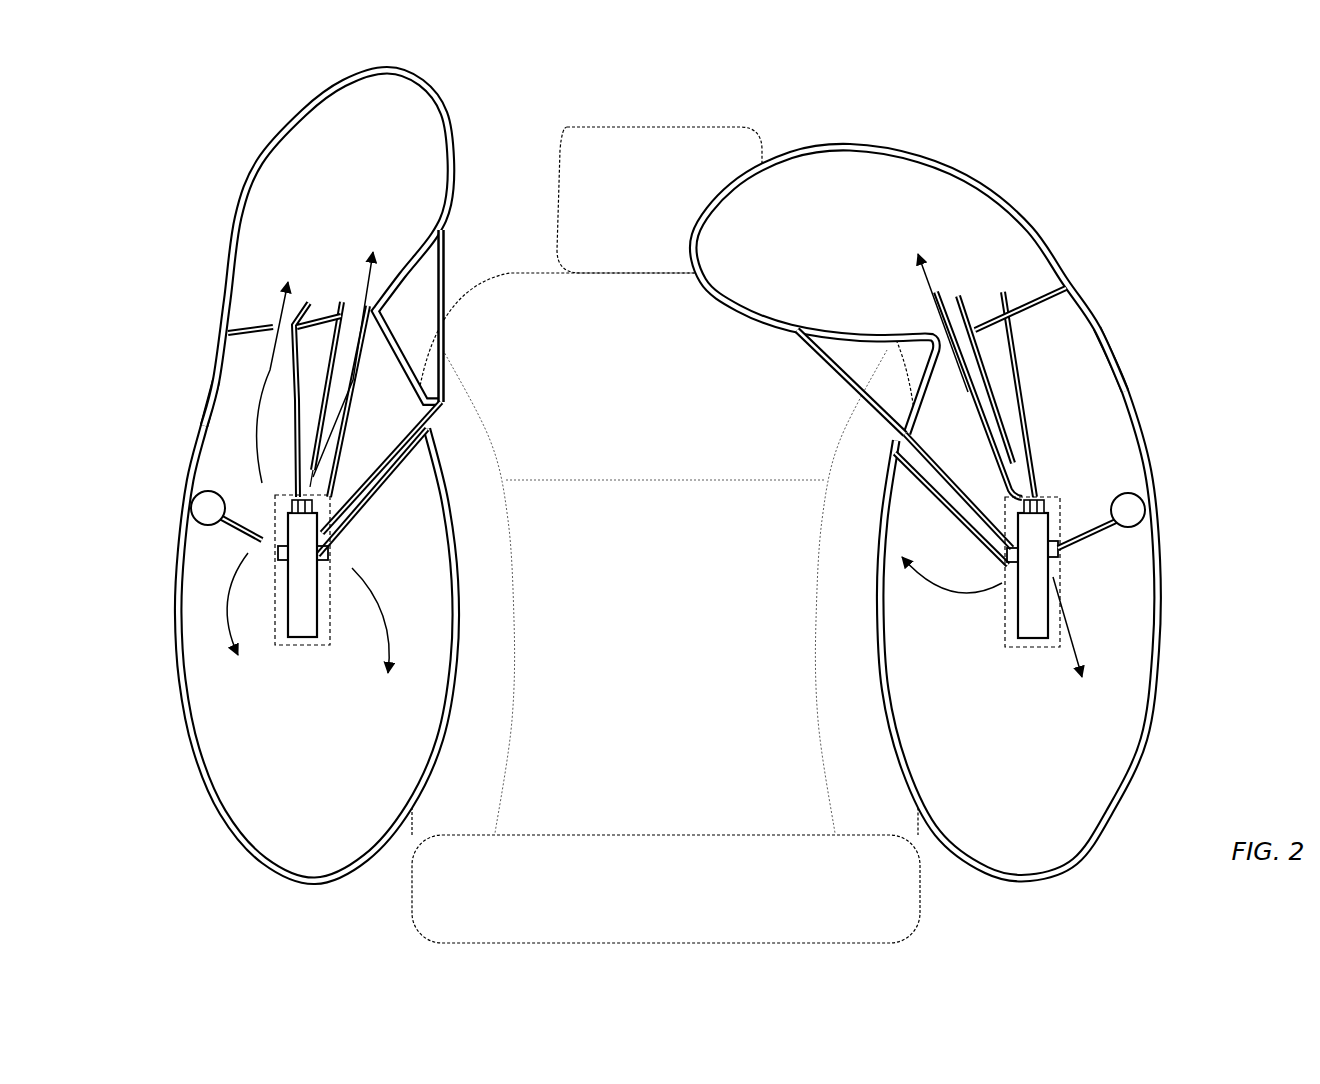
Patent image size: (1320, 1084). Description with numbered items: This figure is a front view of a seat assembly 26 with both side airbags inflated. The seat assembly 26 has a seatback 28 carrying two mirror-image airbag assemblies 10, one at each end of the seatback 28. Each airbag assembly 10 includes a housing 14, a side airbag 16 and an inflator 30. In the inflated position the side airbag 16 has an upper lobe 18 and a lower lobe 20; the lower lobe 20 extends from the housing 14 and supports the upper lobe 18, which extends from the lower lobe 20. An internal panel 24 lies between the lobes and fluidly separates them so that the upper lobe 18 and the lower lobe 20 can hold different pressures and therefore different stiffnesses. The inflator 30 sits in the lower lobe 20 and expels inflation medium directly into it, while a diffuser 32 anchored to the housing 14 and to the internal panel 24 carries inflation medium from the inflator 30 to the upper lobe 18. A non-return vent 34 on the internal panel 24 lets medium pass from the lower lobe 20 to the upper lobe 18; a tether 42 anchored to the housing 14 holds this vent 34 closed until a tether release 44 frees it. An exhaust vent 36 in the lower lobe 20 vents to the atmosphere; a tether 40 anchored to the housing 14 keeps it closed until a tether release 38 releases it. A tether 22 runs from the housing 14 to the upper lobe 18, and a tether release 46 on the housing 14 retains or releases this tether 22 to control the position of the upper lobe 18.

The airbag assembly 10 is at (665, 475).
The housing 14 is at (288, 648).
The side airbag 16 is at (665, 475).
The upper lobe 18 is at (245, 200).
The lower lobe 20 is at (175, 633).
The tether 22 is at (445, 270).
The internal panel 24 is at (228, 333).
The seat assembly 26 is at (666, 498).
The seatback 28 is at (611, 121).
The inflator 30 is at (305, 640).
The diffuser 32 is at (380, 488).
The vent 34 is at (312, 298).
The exhaust vent 36 is at (203, 527).
The tether release 38 is at (1060, 557).
The tether 40 is at (237, 530).
The tether 42 is at (293, 383).
The tether release 44 is at (290, 503).
The tether release 46 is at (330, 560).